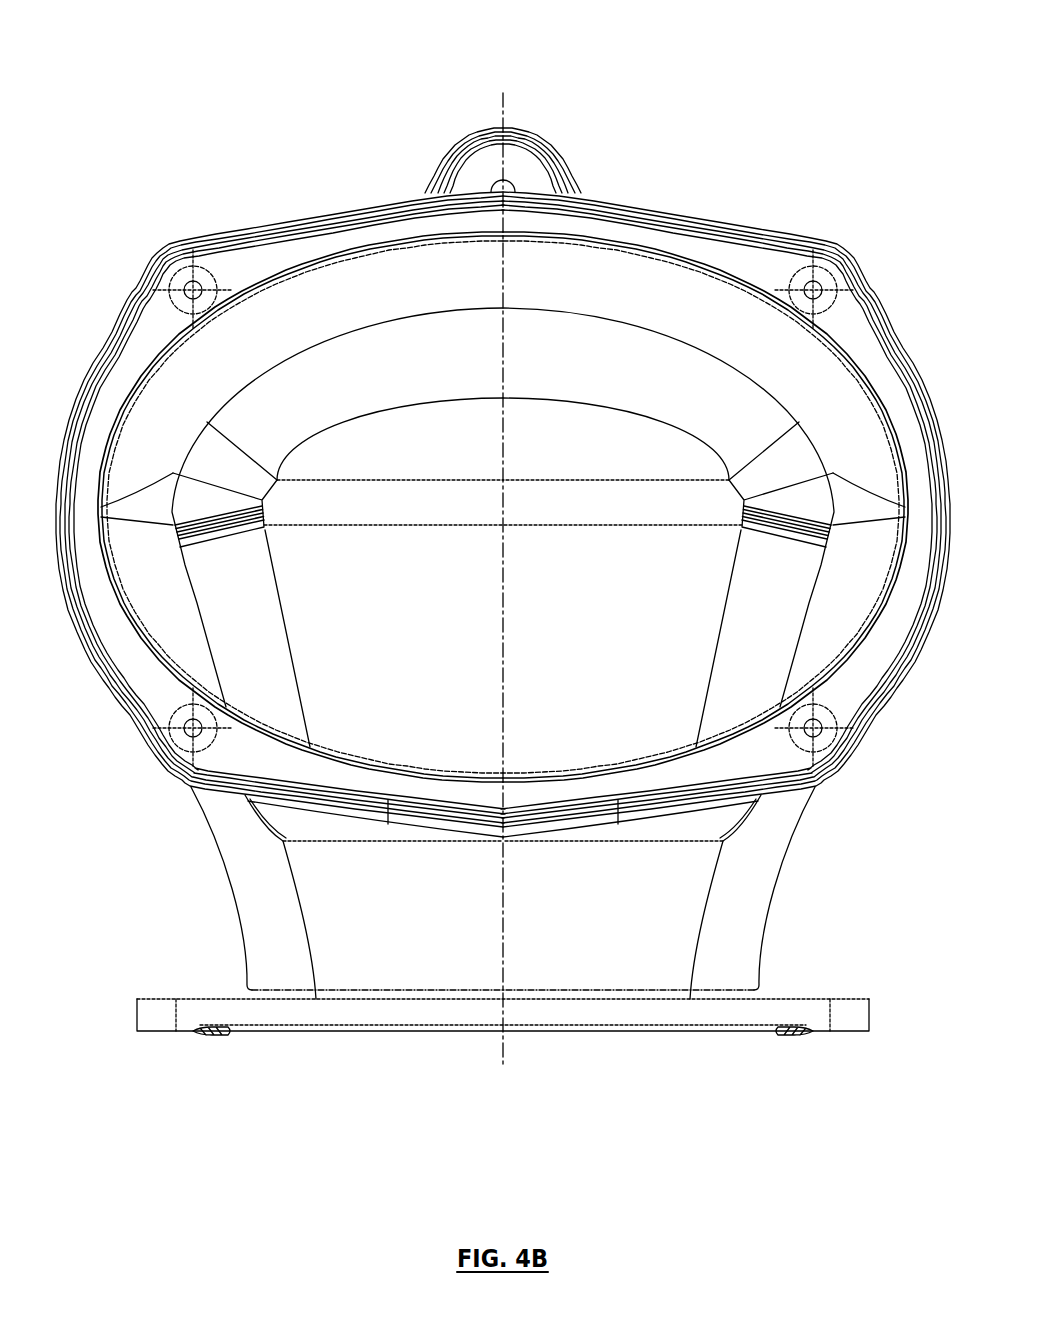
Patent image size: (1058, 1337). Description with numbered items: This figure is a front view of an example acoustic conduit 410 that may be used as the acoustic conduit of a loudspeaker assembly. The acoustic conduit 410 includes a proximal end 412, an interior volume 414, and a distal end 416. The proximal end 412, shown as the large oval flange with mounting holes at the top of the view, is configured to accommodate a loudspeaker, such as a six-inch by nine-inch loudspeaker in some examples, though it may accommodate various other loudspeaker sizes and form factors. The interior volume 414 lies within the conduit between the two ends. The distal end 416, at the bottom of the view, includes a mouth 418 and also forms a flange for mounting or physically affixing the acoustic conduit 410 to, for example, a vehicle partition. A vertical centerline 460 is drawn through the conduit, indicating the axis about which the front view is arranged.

The acoustic conduit 410 is at (830, 84).
The proximal end 412 is at (122, 304).
The interior volume 414 is at (424, 646).
The distal end 416 is at (753, 1033).
The mouth 418 is at (576, 1071).
The centerline 460 is at (503, 92).